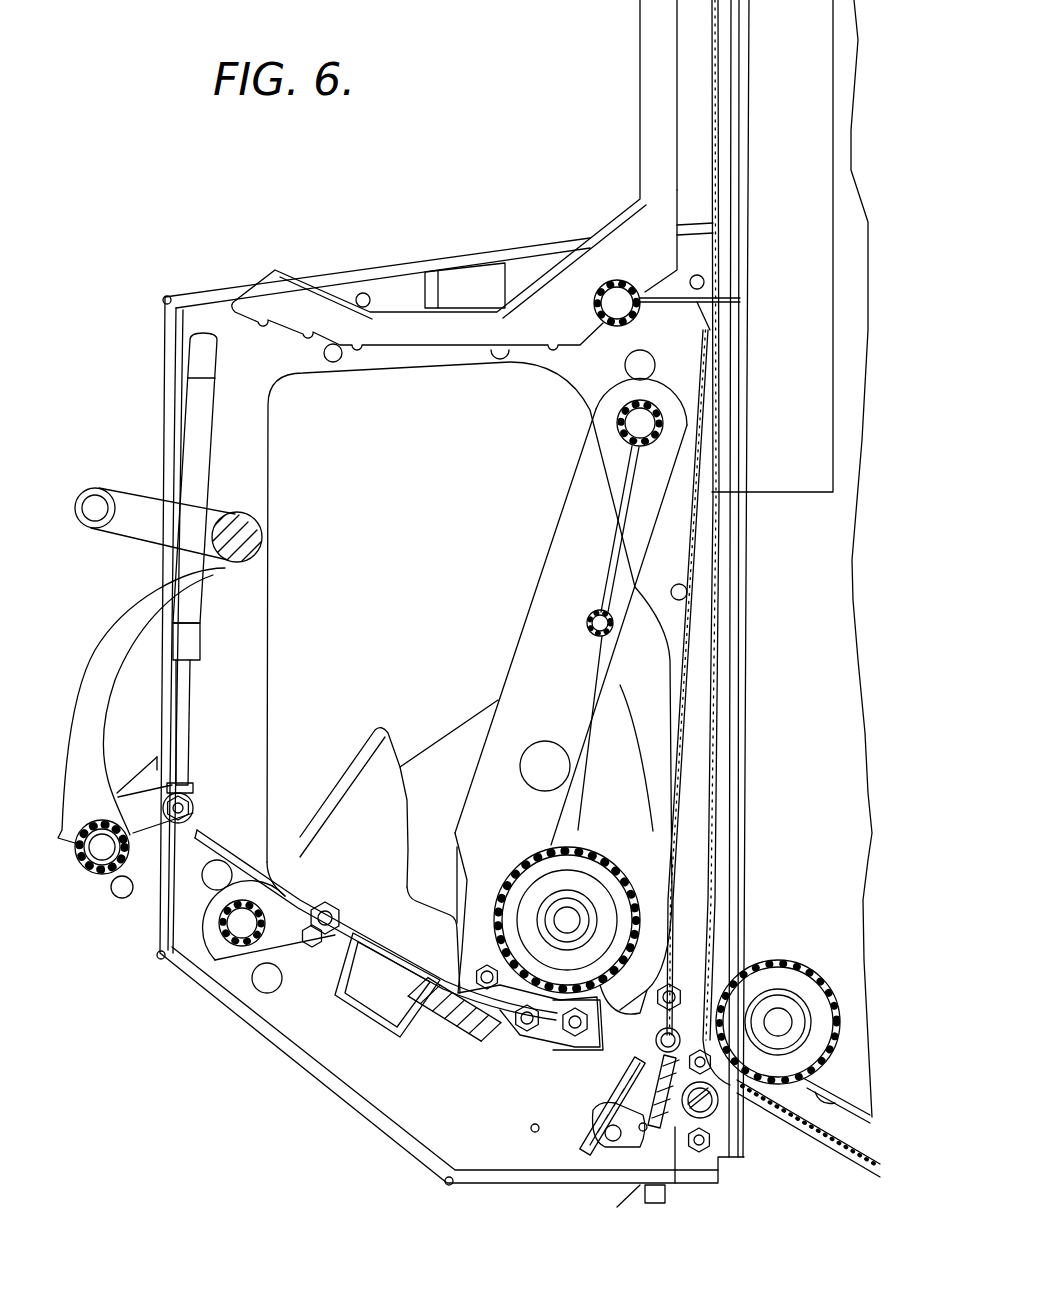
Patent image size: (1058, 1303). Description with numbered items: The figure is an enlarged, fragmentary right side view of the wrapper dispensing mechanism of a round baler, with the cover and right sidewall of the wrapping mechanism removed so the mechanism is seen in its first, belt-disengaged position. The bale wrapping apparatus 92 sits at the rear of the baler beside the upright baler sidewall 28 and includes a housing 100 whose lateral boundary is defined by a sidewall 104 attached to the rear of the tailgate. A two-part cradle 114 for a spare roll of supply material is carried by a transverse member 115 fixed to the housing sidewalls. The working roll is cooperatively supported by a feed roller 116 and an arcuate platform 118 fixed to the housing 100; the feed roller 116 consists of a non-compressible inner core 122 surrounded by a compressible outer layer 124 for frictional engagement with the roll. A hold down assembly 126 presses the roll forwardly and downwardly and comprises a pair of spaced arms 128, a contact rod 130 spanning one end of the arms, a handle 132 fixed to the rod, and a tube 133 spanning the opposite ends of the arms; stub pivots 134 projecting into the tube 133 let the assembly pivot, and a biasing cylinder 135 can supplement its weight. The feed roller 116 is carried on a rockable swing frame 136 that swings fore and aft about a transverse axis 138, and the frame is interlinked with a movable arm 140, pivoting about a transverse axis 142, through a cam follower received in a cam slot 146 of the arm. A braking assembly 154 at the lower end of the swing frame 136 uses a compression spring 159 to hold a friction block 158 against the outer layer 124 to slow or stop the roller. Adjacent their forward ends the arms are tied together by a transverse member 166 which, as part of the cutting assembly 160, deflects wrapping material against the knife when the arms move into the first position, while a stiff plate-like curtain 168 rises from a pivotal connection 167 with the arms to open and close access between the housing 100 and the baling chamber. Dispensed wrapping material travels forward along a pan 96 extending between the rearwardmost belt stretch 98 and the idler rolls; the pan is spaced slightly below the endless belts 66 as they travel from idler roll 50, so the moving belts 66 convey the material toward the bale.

The bale wrapping apparatus 92 is at (157, 295).
The housing 100 is at (208, 1003).
The sidewall 104 is at (307, 1018).
The two-part cradle 114 is at (628, 235).
The transverse member 115 is at (600, 320).
The sidewall 28 is at (855, 208).
The biasing cylinder 135 is at (190, 414).
The handle 132 is at (142, 507).
The contact rod 130 is at (250, 533).
The hold down assembly 126 is at (75, 630).
The arms 128 is at (93, 710).
The stub pivots 134 is at (100, 850).
The tube 133 is at (103, 870).
The transverse axis 142 is at (245, 920).
The platform 118 is at (353, 933).
The braking assembly 154 is at (357, 1020).
The compression spring 159 is at (430, 1027).
The friction block 158 is at (552, 1014).
The feed roller 116 is at (500, 868).
The outer layer 124 is at (547, 847).
The inner core 122 is at (593, 887).
The swing frame 136 is at (590, 498).
The transverse axis 138 is at (655, 422).
The cam slot 146 is at (578, 812).
The movable arm 140 is at (470, 733).
The curtain 168 is at (690, 690).
The rearwardmost belt stretch 98 is at (722, 792).
The pivotal connection 167 is at (672, 1033).
The idler roll 50 is at (800, 975).
The endless belts 66 is at (818, 1143).
The pan 96 is at (827, 1143).
The transverse member 166 is at (652, 1130).
The cutting assembly 160 is at (570, 1118).